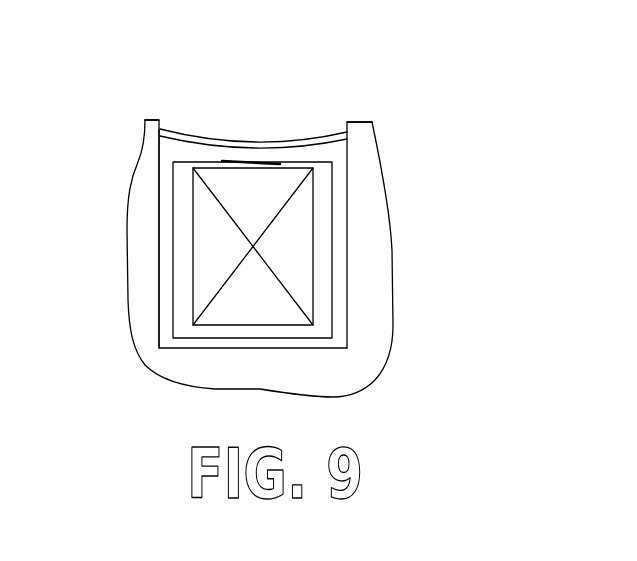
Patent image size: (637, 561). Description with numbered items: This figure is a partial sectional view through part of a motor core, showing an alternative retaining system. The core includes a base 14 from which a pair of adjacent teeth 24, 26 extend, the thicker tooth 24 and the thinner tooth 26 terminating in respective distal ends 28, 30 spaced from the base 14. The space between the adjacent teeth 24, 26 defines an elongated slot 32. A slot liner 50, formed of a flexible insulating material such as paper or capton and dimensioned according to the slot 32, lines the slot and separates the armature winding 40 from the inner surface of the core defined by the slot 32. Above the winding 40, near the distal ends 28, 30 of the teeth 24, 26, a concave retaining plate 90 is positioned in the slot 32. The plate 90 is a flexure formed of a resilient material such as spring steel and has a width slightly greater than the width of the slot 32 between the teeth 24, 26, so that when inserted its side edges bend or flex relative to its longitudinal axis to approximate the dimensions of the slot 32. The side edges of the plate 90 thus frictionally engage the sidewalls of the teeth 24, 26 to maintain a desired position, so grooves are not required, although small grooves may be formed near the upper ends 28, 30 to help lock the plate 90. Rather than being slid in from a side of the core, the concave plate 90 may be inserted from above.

The base 14 is at (383, 350).
The tooth 24 is at (375, 187).
The tooth 26 is at (137, 197).
The distal end 28 is at (360, 121).
The distal end 30 is at (153, 119).
The slot 32 is at (157, 313).
The armature winding 40 is at (265, 308).
The slot liner 50 is at (332, 263).
The retaining plate 90 is at (198, 136).